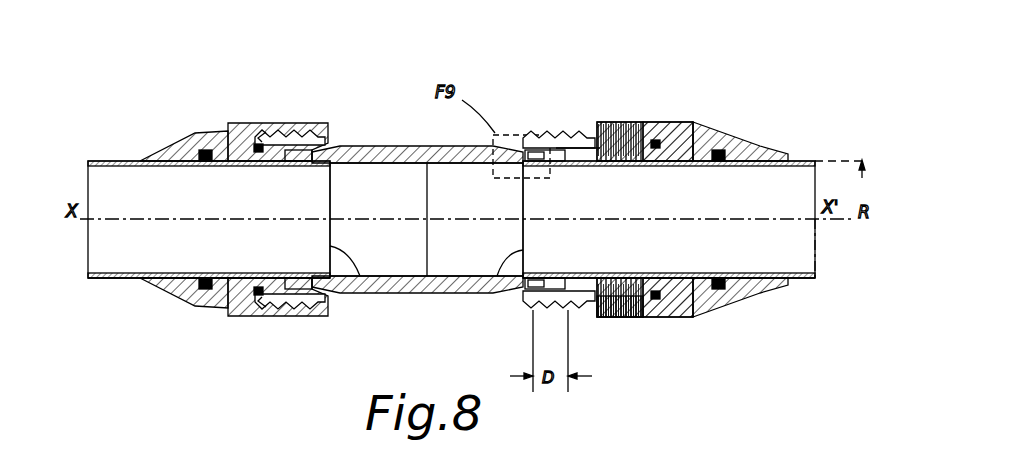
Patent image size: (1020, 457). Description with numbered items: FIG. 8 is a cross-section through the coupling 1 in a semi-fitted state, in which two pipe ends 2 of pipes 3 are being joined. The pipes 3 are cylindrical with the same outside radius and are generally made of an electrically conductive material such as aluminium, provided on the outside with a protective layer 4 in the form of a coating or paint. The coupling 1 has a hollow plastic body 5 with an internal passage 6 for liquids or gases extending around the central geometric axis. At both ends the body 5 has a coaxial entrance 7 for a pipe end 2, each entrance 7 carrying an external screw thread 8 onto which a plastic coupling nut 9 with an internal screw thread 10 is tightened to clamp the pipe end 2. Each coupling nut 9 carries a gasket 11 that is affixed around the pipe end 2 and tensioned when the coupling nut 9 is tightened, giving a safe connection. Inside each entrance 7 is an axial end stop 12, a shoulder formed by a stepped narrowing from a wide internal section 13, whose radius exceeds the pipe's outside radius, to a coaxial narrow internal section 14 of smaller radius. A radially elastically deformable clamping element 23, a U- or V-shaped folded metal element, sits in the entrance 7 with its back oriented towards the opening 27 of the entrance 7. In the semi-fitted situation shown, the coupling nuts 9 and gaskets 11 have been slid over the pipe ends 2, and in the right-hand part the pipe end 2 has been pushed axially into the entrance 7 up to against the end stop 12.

The coupling 1 is at (806, 46).
The pipe end 2 is at (334, 292).
The pipe 3 is at (112, 176).
The protective layer 4 is at (113, 284).
The body 5 is at (394, 150).
The internal passage 6 is at (405, 292).
The entrance 7 is at (599, 124).
The external screw thread 8 is at (560, 130).
The coupling nut 9 is at (180, 150).
The internal screw thread 10 is at (650, 122).
The gasket 11 is at (243, 130).
The axial end stop 12 is at (368, 284).
The wide internal section 13 is at (558, 90).
The narrow internal section 14 is at (528, 84).
The clamping element 23 is at (293, 122).
The opening 27 is at (590, 318).